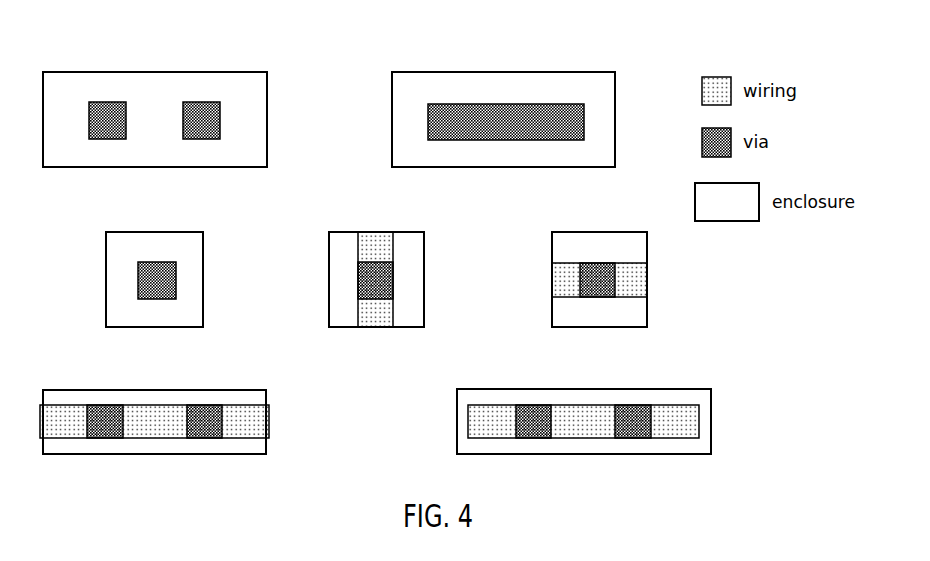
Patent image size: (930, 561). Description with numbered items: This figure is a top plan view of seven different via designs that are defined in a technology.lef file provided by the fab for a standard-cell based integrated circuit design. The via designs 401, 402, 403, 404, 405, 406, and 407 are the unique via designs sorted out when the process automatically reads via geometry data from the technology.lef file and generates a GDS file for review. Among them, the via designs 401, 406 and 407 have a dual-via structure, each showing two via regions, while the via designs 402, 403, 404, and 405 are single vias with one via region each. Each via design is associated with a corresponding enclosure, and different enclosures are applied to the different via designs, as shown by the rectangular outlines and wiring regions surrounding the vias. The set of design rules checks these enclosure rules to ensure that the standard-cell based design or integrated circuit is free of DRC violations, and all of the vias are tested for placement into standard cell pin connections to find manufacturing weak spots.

The via design 401 is at (155, 110).
The via design 402 is at (503, 110).
The via design 403 is at (154, 269).
The via design 404 is at (376, 269).
The via design 405 is at (599, 269).
The via design 406 is at (154, 412).
The via design 407 is at (584, 412).